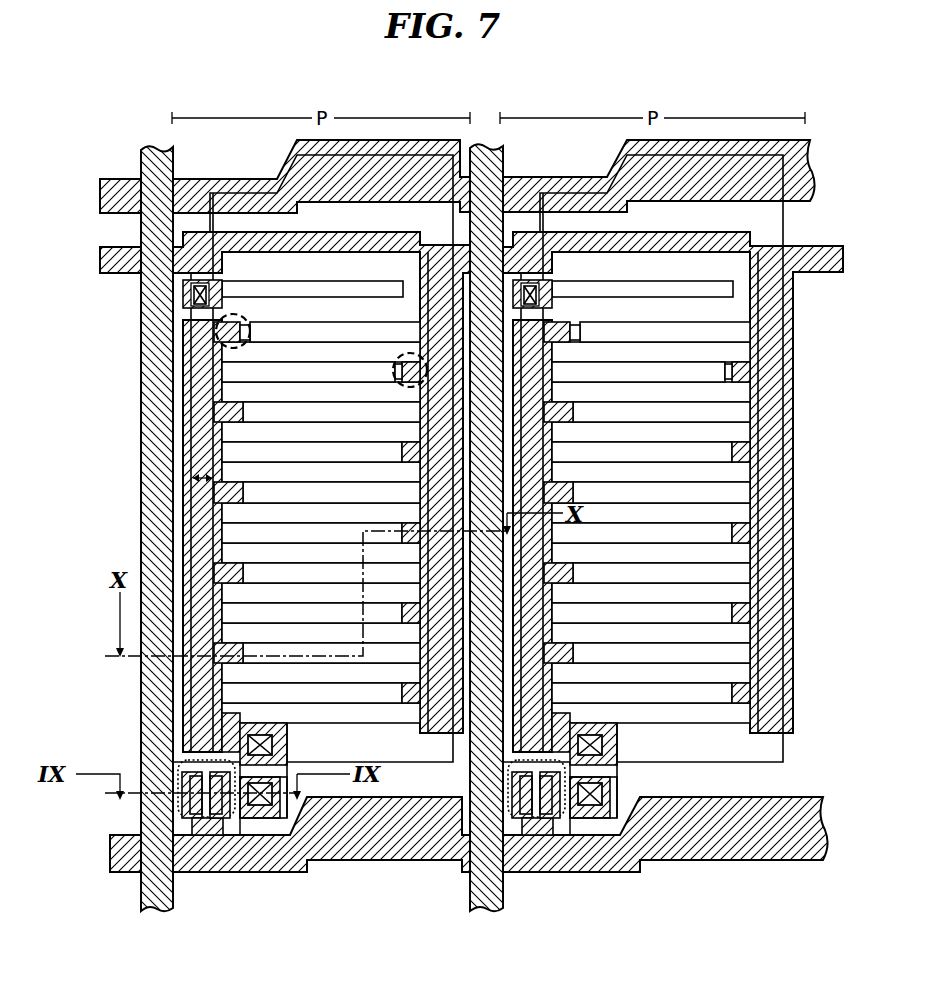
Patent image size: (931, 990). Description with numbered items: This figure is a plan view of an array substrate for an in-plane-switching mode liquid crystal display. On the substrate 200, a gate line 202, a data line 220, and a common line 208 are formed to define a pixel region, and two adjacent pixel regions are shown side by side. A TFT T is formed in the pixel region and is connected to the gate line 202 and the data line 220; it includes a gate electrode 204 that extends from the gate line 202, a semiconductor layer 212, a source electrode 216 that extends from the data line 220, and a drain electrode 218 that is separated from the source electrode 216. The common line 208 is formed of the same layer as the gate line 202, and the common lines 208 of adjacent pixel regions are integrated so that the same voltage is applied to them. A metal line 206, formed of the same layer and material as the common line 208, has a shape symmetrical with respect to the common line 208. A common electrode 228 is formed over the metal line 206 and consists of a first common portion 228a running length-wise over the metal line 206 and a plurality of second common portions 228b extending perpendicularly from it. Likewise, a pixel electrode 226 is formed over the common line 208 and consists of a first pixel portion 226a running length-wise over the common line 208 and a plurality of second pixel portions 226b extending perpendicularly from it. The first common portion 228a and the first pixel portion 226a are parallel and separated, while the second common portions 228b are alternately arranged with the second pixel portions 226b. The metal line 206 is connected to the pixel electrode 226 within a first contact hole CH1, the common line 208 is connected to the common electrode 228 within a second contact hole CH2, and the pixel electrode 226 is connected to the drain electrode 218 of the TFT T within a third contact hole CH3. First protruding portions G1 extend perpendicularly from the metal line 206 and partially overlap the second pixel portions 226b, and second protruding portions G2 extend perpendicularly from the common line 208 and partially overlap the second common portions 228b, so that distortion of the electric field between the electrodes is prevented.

The substrate 200 is at (864, 764).
The gate line 202 is at (752, 872).
The gate electrode 204 is at (188, 762).
The metal line 206 is at (184, 358).
The common line 208 is at (372, 232).
The semiconductor layer 212 is at (212, 818).
The source electrode 216 is at (190, 822).
The drain electrode 218 is at (268, 818).
The data line 220 is at (146, 141).
The pixel electrode 226 is at (357, 469).
The first pixel portion 226a is at (452, 514).
The second pixel portions 226b is at (383, 424).
The common electrode 228 is at (68, 392).
The first common portion 228a is at (188, 466).
The second common portions 228b is at (192, 427).
The first contact hole CH1 is at (272, 745).
The second contact hole CH2 is at (188, 291).
The third contact hole CH3 is at (270, 777).
The first protruding portions G1 is at (254, 316).
The second protruding portions G2 is at (384, 361).
The TFT T is at (228, 820).